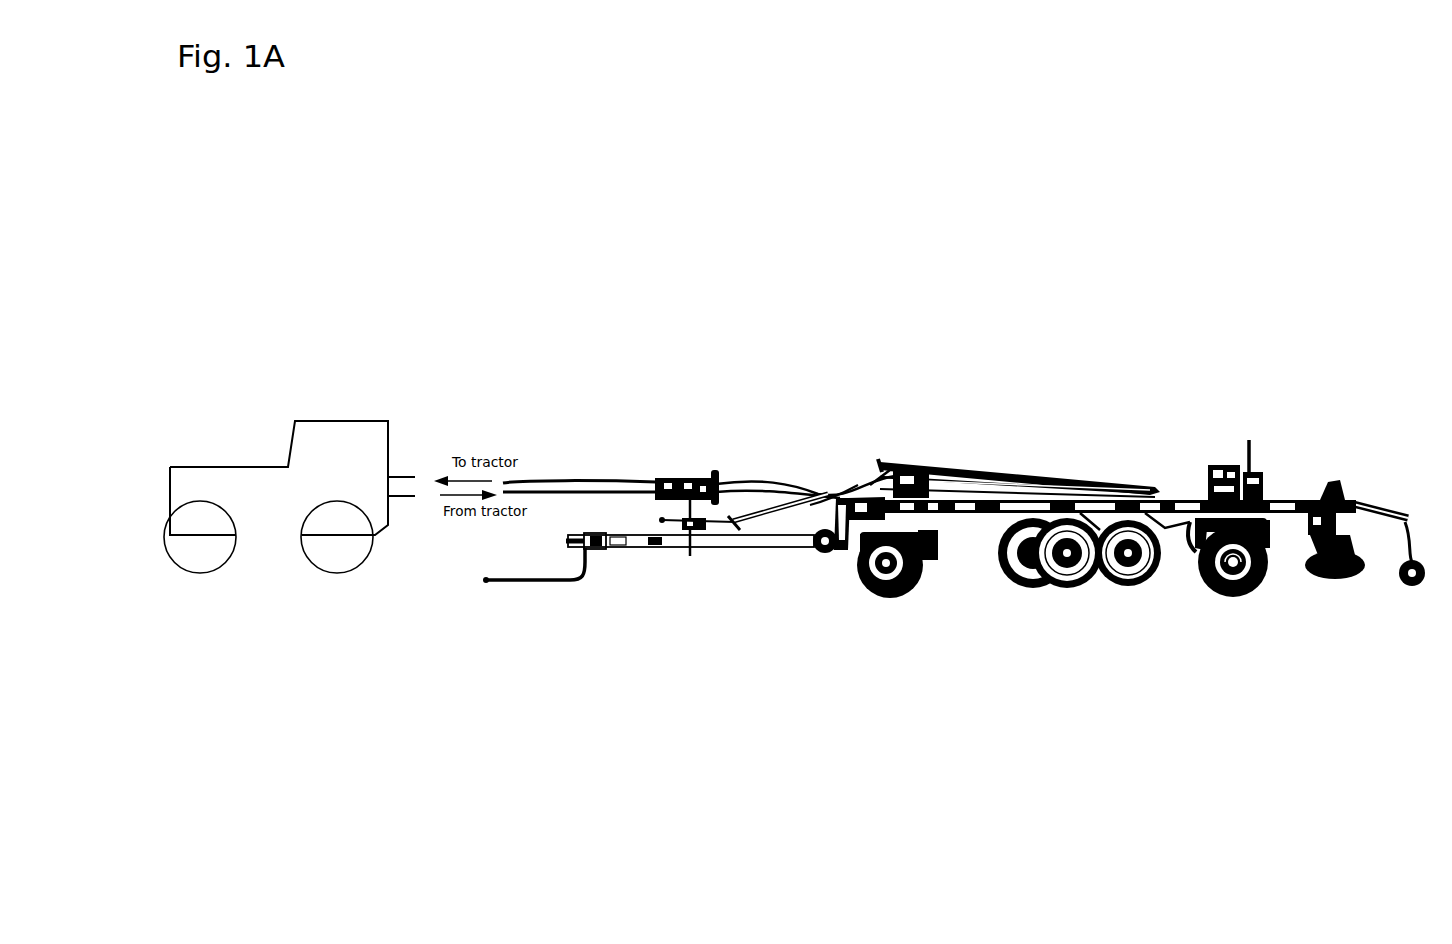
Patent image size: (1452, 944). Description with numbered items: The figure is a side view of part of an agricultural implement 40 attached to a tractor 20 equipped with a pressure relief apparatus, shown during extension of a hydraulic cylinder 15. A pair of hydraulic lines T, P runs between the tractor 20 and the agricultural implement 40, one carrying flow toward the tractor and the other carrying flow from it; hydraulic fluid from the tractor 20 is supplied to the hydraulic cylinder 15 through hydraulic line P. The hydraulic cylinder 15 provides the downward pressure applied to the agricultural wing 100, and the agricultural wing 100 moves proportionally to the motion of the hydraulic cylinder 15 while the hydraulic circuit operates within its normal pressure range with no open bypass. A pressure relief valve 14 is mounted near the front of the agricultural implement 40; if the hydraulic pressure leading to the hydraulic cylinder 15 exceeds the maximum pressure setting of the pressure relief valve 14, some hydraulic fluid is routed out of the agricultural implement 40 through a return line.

The tractor 20 is at (275, 537).
The hydraulic line T is at (552, 480).
The hydraulic line P is at (545, 495).
The pressure relief valve 14 is at (868, 480).
The hydraulic cylinder 15 is at (1215, 458).
The agricultural implement 40 is at (1047, 417).
The agricultural wing 100 is at (932, 585).